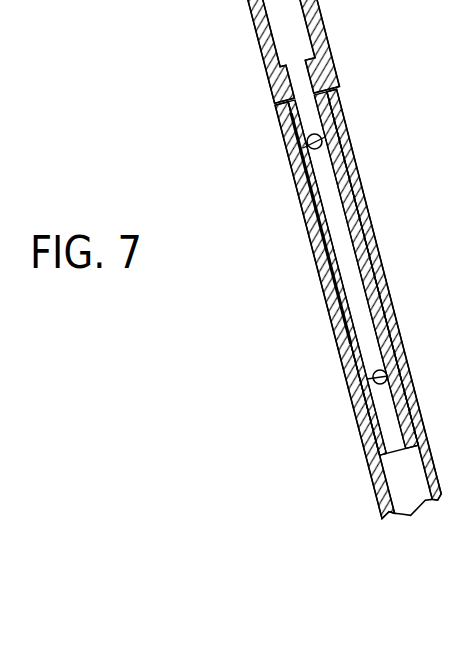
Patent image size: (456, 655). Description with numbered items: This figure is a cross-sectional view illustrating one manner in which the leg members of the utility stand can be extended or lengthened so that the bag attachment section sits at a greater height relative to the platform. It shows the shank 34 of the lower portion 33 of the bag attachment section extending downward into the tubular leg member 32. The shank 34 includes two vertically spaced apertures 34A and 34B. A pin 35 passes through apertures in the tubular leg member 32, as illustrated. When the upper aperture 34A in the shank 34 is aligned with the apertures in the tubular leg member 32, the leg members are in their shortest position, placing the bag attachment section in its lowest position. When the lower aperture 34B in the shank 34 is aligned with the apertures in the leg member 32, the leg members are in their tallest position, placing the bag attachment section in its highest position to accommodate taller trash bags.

The tubular leg member 32 is at (382, 500).
The lower portion of the bag attachment section 33 is at (257, 21).
The shank 34 is at (312, 284).
The aperture 34A is at (300, 147).
The aperture 34B is at (372, 384).
The pin 35 is at (326, 136).